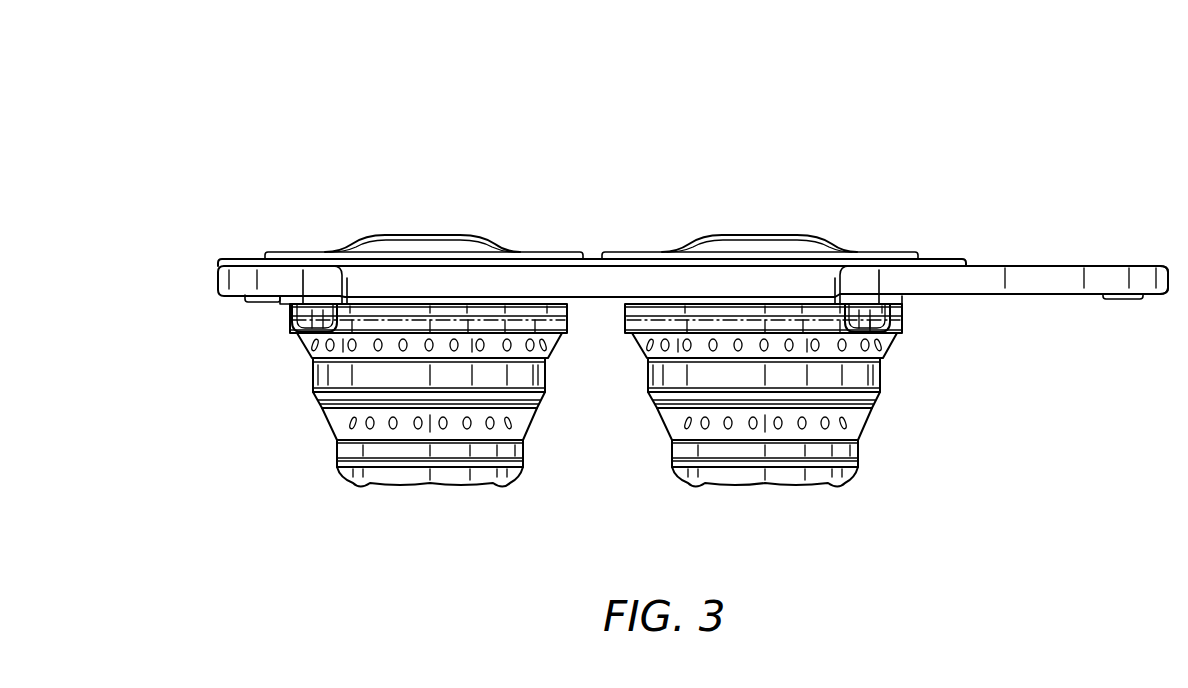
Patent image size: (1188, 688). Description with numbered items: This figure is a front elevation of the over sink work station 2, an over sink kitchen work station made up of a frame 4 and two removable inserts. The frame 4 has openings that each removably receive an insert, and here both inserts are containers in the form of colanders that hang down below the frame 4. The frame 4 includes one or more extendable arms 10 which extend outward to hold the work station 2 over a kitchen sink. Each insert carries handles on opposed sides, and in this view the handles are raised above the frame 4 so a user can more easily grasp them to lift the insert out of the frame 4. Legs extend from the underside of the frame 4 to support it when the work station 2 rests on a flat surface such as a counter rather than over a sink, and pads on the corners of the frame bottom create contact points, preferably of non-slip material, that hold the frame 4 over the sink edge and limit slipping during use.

The over sink work station 2 is at (965, 76).
The frame 4 is at (600, 280).
The extendable arm 10 is at (1053, 278).